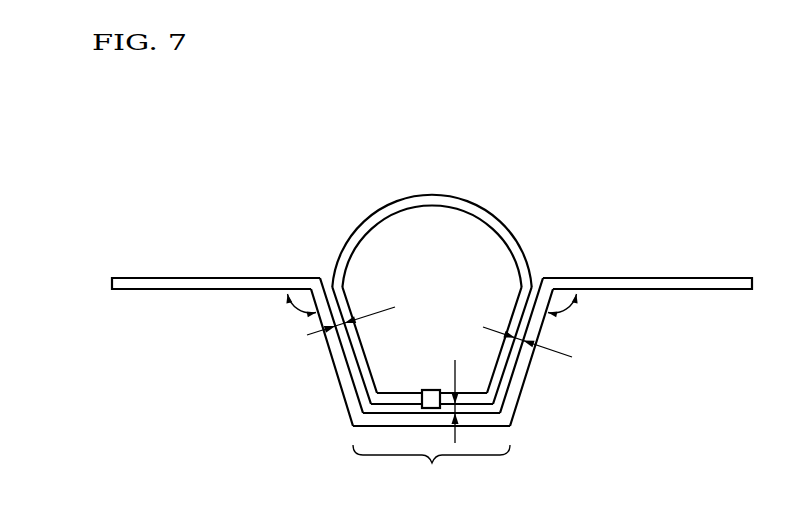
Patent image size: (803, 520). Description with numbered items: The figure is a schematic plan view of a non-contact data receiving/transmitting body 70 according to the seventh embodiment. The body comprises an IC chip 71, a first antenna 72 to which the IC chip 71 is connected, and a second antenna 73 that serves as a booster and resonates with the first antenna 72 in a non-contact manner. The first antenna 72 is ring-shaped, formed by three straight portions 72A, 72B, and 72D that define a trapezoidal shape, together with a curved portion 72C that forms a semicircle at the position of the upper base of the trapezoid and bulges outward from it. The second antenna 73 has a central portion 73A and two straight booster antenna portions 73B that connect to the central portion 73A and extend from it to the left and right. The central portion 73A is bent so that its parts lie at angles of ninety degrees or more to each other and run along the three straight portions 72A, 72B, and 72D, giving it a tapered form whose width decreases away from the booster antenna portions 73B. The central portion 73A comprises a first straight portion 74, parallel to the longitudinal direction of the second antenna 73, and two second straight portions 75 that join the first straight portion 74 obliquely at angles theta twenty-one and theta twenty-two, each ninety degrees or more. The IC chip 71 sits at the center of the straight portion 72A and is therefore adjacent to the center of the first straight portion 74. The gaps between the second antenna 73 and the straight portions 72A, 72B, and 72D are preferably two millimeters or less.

The non-contact data receiving/transmitting body 70 is at (632, 158).
The IC chip 71 is at (431, 389).
The first antenna 72 is at (490, 212).
The straight portion 72A is at (405, 397).
The straight portion 72B is at (361, 348).
The curved portion 72C is at (395, 207).
The straight portion 72D is at (512, 319).
The second antenna 73 is at (523, 387).
The central portion 73A is at (431, 469).
The booster antenna portion 73B is at (320, 262).
The first straight portion 74 is at (383, 418).
The second straight portion 75 is at (338, 352).